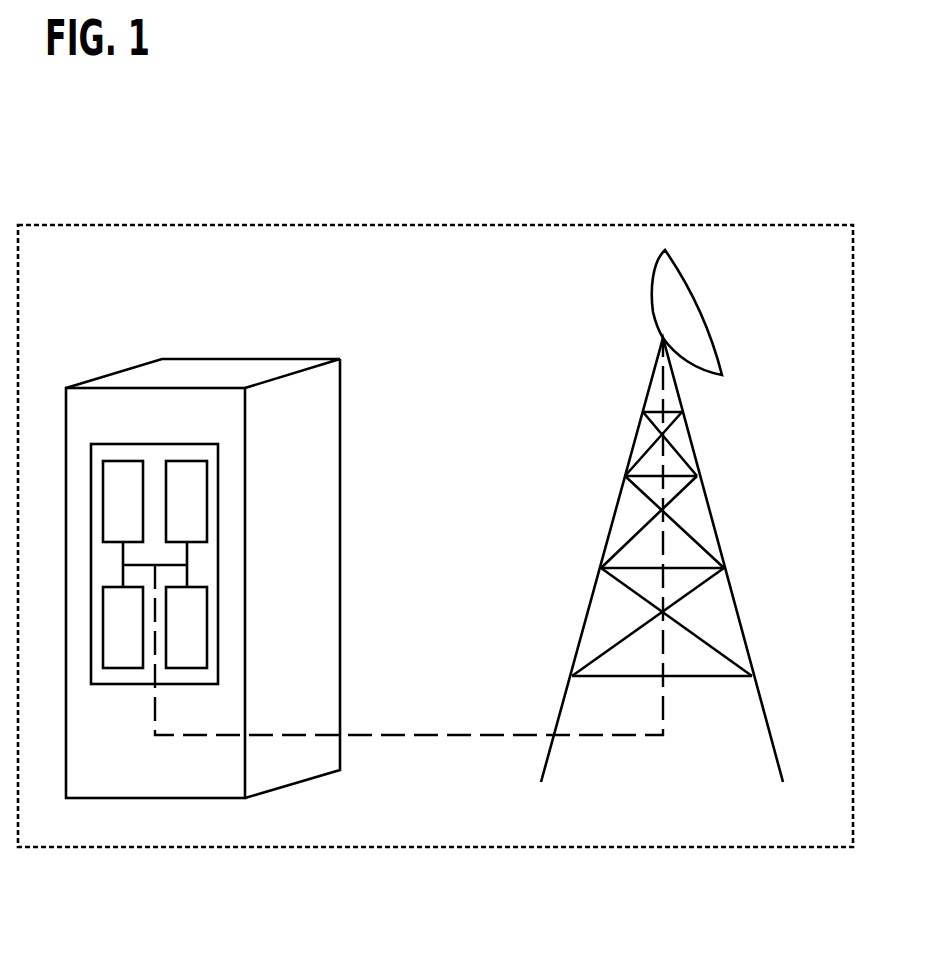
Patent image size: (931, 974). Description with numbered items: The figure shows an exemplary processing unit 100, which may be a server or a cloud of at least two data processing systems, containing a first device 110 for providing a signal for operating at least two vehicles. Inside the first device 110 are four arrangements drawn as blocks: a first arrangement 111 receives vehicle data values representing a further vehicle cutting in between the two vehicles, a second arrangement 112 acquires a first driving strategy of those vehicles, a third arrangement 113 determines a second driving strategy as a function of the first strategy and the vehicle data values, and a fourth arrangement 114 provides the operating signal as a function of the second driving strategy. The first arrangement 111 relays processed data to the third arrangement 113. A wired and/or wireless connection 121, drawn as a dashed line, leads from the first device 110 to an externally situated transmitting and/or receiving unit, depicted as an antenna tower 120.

The processing unit 100 is at (430, 848).
The first device 110 is at (218, 557).
The first arrangement 111 is at (117, 460).
The second arrangement 112 is at (207, 489).
The third arrangement 113 is at (127, 668).
The fourth arrangement 114 is at (207, 627).
The radio tower / base station 120 is at (717, 678).
The wired and/or wireless connection 121 is at (437, 734).